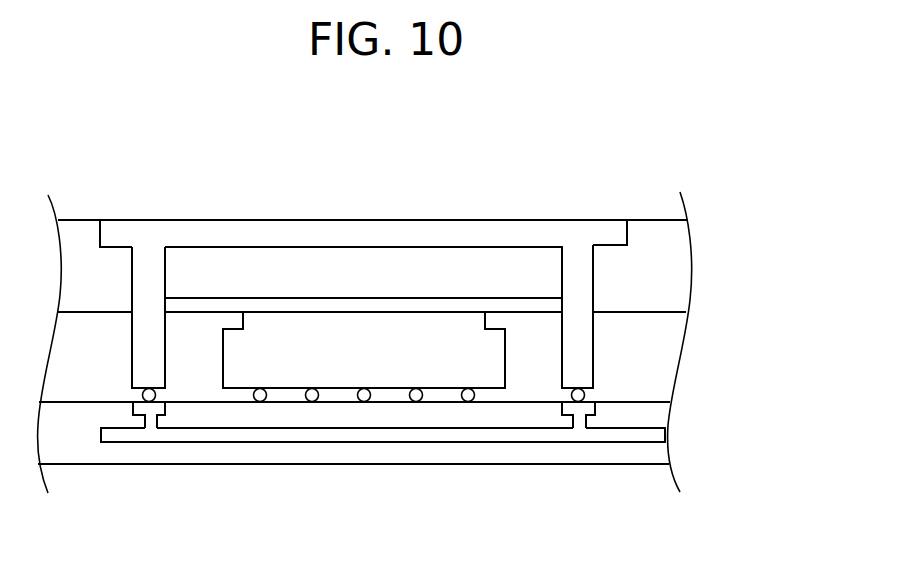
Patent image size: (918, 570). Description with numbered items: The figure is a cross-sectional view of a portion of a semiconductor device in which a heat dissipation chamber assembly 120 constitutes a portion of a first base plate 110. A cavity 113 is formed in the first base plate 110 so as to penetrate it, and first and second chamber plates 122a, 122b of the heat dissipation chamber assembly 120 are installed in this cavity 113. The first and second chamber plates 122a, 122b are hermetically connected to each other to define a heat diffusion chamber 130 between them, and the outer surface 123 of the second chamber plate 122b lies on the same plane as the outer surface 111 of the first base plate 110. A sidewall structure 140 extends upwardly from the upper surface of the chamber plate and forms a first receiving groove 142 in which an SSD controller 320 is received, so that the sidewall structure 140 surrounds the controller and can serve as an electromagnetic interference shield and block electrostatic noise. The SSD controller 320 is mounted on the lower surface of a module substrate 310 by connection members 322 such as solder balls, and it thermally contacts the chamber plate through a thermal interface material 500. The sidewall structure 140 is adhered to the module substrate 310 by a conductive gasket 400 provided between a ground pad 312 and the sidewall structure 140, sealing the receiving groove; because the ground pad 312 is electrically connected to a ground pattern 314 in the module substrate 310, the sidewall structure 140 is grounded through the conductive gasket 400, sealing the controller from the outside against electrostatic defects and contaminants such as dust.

The first base plate 110 is at (650, 230).
The outer surface of the first base plate 111 is at (78, 212).
The cavity 113 is at (595, 275).
The heat dissipation chamber assembly 120 is at (299, 232).
The first chamber plate 122a is at (523, 303).
The second chamber plate 122b is at (372, 232).
The outer surface of the second chamber plate 123 is at (153, 212).
The heat diffusion chamber 130 is at (448, 258).
The sidewall structure 140 is at (583, 352).
The first receiving groove 142 is at (194, 378).
The module substrate 310 is at (77, 455).
The ground pad 312 is at (590, 410).
The ground pattern 314 is at (616, 435).
The SSD controller 320 is at (338, 372).
The connection members 322 is at (260, 404).
The conductive gasket 400 is at (585, 393).
The thermal interface material 500 is at (440, 325).